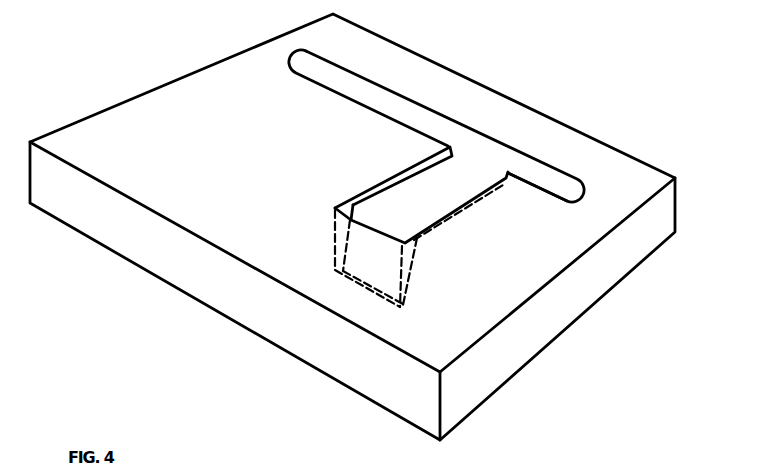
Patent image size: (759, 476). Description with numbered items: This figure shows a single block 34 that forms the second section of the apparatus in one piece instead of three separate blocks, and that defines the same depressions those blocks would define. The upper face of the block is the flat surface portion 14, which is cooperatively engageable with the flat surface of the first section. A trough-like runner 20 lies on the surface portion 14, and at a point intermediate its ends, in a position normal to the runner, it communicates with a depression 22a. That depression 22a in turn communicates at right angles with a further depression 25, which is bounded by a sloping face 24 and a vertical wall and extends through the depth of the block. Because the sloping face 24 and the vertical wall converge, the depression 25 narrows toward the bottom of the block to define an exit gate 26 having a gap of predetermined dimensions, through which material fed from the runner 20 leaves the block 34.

The flat surface portion 14 is at (243, 92).
The trough-like runner 20 is at (408, 112).
The depression 22a is at (467, 183).
The sloping face 24 is at (366, 222).
The depression 25 is at (377, 263).
The exit gate 26 is at (390, 302).
The single block 34 is at (563, 313).